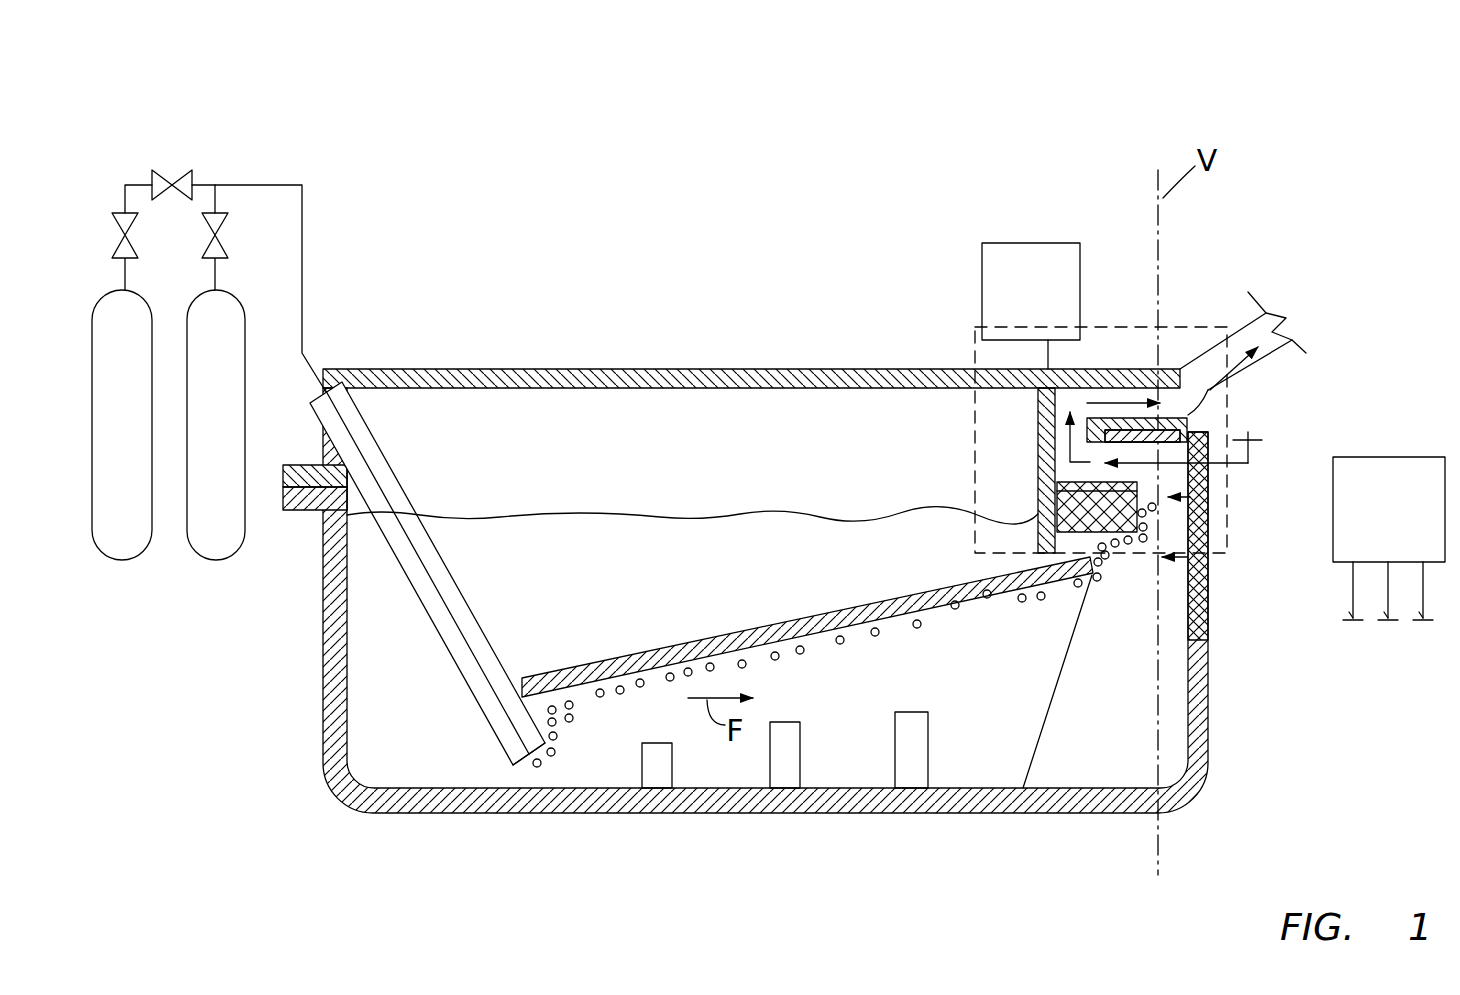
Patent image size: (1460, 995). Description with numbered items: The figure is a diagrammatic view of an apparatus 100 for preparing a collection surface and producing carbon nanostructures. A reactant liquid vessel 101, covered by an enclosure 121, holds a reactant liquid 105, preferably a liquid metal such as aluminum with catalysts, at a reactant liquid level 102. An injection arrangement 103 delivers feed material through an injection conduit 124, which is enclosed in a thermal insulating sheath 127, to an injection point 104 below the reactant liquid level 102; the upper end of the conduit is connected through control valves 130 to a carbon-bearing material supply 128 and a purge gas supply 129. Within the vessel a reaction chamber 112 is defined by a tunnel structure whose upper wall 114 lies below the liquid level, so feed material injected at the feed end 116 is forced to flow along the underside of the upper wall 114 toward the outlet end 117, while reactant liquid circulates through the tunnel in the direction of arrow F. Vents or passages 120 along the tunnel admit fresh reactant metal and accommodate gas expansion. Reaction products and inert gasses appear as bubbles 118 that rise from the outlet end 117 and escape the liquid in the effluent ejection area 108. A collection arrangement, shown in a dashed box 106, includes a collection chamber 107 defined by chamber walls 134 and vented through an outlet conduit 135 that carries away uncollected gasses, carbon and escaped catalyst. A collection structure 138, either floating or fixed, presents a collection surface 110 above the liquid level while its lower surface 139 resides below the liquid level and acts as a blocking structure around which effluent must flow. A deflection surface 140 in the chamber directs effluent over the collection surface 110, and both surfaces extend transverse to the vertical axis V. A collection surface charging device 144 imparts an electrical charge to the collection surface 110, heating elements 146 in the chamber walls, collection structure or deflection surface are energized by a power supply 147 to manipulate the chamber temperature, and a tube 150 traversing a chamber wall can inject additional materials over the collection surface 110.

The apparatus 100 is at (1082, 150).
The reactant liquid vessel 101 is at (323, 683).
The reactant liquid level 102 is at (590, 512).
The injection arrangement 103 is at (390, 735).
The injection point 104 is at (512, 762).
The reactant liquid 105 is at (611, 594).
The dashed box (collection arrangement) 106 is at (975, 337).
The collection chamber 107 is at (1200, 462).
The effluent ejection area 108 is at (1192, 500).
The collection surface 110 is at (1085, 482).
The reaction chamber 112 is at (955, 687).
The upper wall 114 is at (797, 617).
The feed end 116 is at (482, 767).
The outlet end 117 is at (1082, 665).
The bubbles 118 is at (555, 757).
The vents or passages 120 is at (910, 765).
The enclosure 121 is at (697, 369).
The injection conduit 124 is at (370, 468).
The thermal insulating sheath 127 is at (407, 493).
The carbon-bearing material supply 128 is at (237, 441).
The purge gas supply 129 is at (143, 441).
The control valves 130 is at (215, 128).
The chamber walls 134 is at (1038, 458).
The outlet conduit 135 is at (1240, 338).
The collection structure 138 is at (1060, 518).
The lower surface 139 is at (1105, 555).
The deflection surface 140 is at (1205, 445).
The collection surface charging device 144 is at (1025, 243).
The heating elements 146 is at (1195, 428).
The power supply 147 is at (1395, 457).
The tube 150 is at (1262, 452).